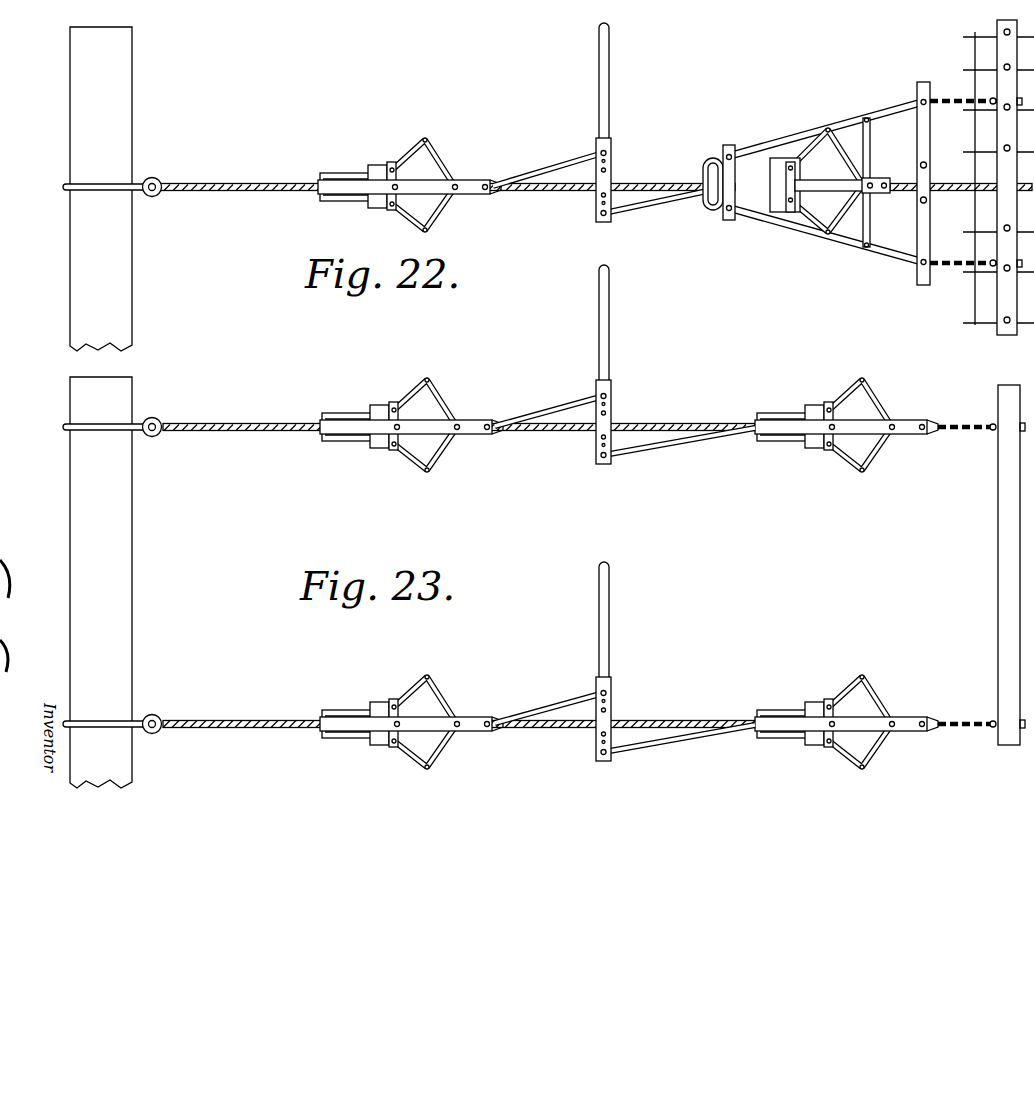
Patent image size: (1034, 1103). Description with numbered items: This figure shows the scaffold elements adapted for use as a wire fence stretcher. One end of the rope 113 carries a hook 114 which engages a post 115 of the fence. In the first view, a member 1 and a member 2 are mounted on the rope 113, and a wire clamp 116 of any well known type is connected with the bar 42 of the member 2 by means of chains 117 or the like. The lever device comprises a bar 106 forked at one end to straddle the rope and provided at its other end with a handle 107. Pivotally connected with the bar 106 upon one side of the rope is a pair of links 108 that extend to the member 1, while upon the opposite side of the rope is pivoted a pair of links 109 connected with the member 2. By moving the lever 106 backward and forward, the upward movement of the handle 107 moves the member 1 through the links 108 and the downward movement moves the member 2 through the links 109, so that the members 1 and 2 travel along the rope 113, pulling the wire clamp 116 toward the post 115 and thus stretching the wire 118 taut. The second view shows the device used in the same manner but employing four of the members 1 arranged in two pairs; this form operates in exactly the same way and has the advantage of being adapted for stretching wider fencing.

In FIG. 22, the member 1 is at (416, 141).
In FIG. 23, the member 1 is at (412, 478).
In FIG. 22, the member 2 is at (816, 177).
In FIG. 22, the bar 42 is at (918, 136).
In FIG. 22, the bar 106 is at (611, 166).
In FIG. 23, the bar 106 is at (603, 570).
In FIG. 22, the handle 107 is at (610, 52).
In FIG. 23, the handle 107 is at (610, 322).
In FIG. 22, the links 108 is at (542, 160).
In FIG. 23, the links 108 is at (542, 418).
In FIG. 22, the links 109 is at (672, 201).
In FIG. 23, the links 109 is at (684, 737).
In FIG. 22, the rope 113 is at (242, 182).
In FIG. 23, the rope 113 is at (238, 423).
In FIG. 22, the hook 114 is at (62, 187).
In FIG. 23, the hook 114 is at (116, 424).
In FIG. 22, the post 115 is at (118, 110).
In FIG. 23, the post 115 is at (118, 530).
In FIG. 22, the wire clamp 116 is at (1000, 50).
In FIG. 23, the wire clamp 116 is at (1005, 555).
In FIG. 22, the chains 117 is at (956, 107).
In FIG. 23, the chains 117 is at (957, 430).
In FIG. 22, the wire 118 is at (967, 272).